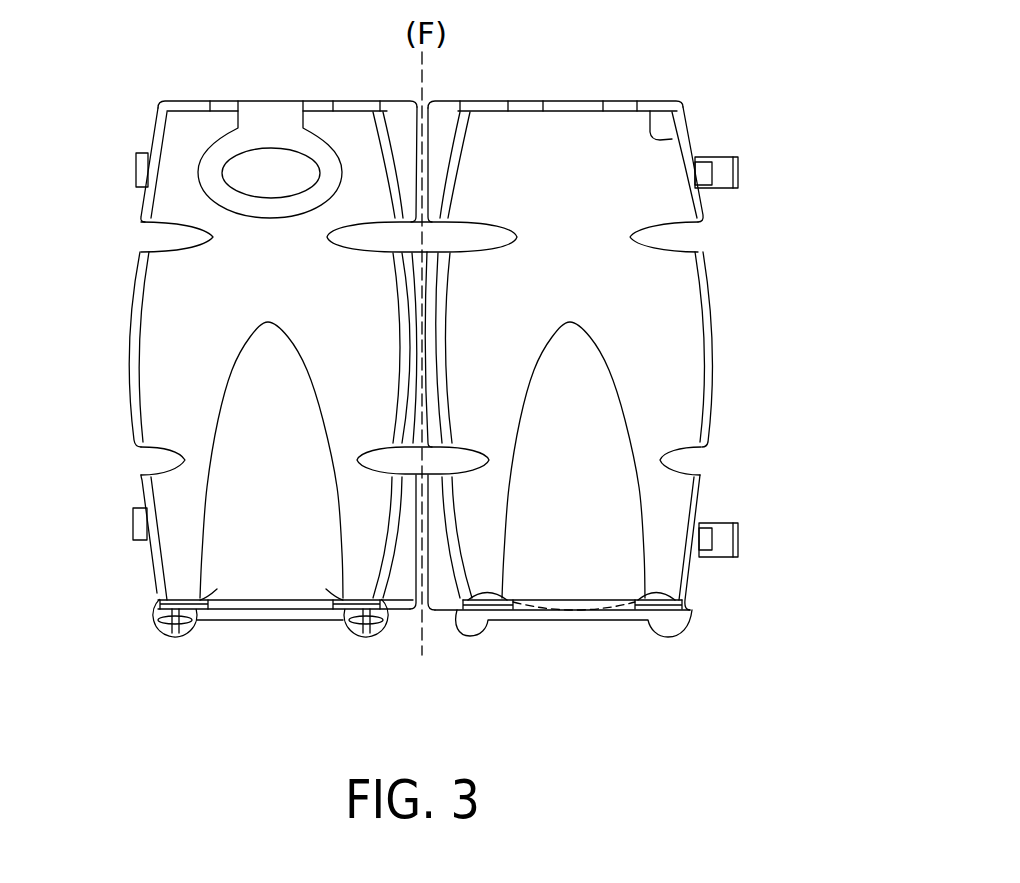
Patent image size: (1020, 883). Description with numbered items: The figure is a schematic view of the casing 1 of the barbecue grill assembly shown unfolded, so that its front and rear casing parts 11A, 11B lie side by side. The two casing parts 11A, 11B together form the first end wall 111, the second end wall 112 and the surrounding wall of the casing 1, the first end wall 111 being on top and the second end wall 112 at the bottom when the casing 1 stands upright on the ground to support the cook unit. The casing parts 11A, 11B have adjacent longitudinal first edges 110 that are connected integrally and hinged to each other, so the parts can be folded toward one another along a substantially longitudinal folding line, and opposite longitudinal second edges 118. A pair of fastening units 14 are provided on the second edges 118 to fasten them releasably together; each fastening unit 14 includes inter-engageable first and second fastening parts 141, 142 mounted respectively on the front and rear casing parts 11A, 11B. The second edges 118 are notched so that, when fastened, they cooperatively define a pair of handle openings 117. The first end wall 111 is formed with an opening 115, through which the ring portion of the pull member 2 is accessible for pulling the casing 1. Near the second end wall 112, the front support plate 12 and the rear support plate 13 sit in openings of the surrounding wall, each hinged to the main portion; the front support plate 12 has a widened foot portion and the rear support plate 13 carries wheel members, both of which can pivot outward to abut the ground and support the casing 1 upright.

The casing 1 is at (744, 307).
The pull member 2 is at (308, 142).
The front casing part 11A is at (713, 390).
The rear casing part 11B is at (143, 525).
The front support plate 12 is at (558, 565).
The rear support plate 13 is at (265, 572).
The fastening unit 14 is at (750, 198).
The first edge 110 is at (410, 217).
The first end wall 111 is at (672, 139).
The second end wall 112 is at (645, 615).
The opening 115 is at (575, 108).
The handle opening 117 is at (157, 238).
The second edge 118 is at (132, 340).
The first fastening part 141 is at (742, 172).
The second fastening part 142 is at (137, 157).